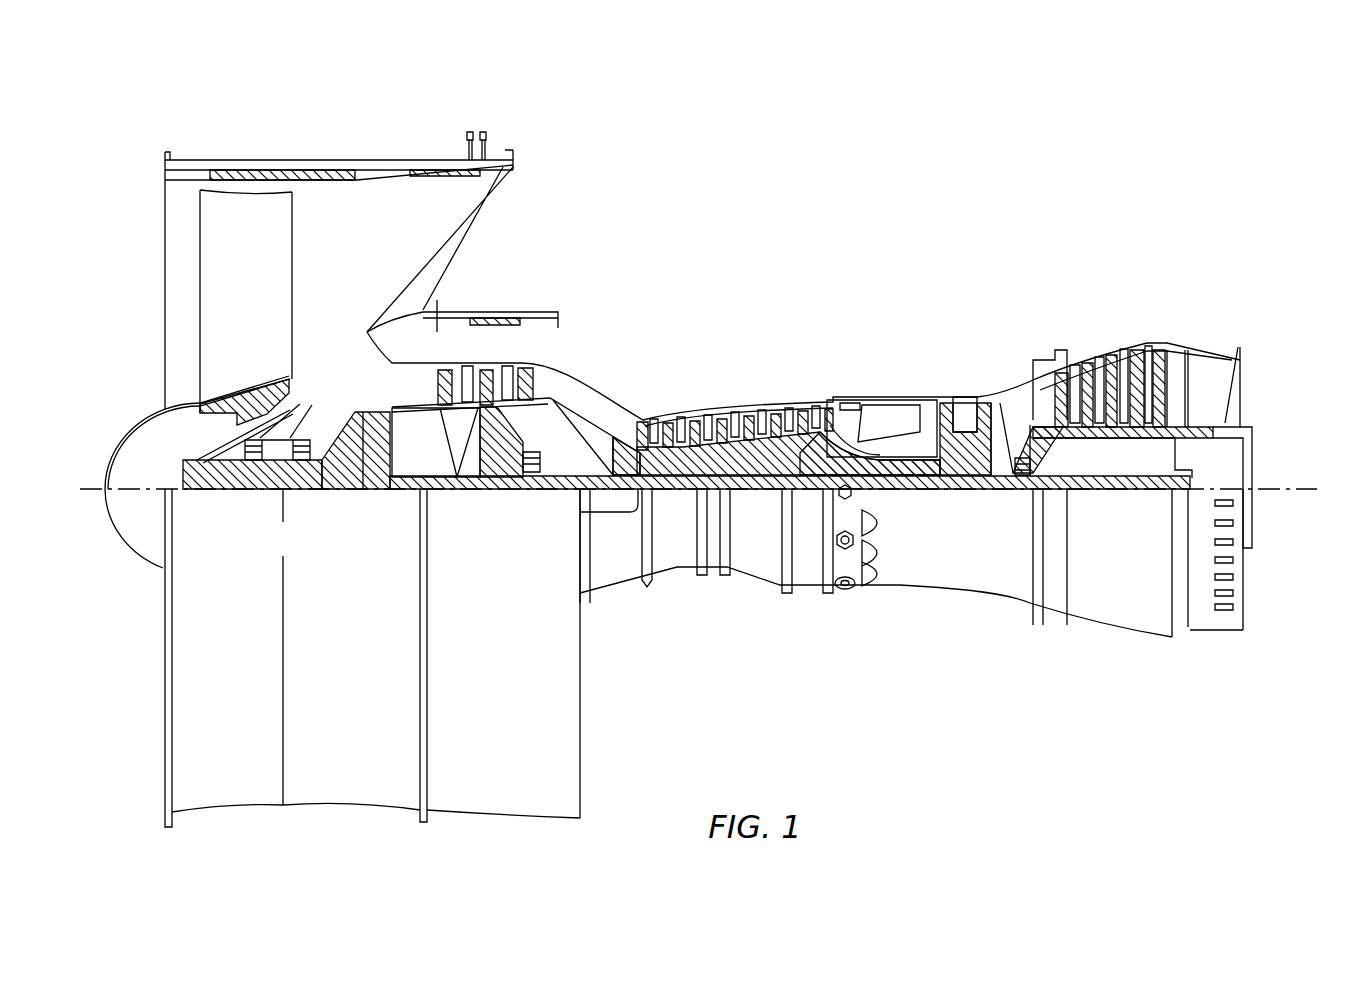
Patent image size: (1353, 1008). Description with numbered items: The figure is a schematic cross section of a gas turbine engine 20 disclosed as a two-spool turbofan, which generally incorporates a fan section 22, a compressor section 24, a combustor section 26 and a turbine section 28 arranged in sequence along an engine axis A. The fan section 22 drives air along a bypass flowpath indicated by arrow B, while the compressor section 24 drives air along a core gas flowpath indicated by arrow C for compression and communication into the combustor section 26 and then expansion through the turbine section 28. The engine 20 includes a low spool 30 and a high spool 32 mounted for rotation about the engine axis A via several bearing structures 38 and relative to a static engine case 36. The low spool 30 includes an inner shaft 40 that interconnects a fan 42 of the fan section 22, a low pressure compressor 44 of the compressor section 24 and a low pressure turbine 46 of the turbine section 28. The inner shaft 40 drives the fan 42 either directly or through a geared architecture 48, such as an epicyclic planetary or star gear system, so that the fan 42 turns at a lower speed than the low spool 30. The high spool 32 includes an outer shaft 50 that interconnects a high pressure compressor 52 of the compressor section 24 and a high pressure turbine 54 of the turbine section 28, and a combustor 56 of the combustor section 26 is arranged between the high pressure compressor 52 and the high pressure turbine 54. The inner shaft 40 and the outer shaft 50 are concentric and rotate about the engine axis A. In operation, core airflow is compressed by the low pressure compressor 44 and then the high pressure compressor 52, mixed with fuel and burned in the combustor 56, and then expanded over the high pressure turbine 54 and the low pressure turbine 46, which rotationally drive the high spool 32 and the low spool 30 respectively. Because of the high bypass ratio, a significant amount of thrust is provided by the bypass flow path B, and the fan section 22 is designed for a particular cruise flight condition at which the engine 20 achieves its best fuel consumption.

The gas turbine engine 20 is at (923, 202).
The fan section 22 is at (157, 138).
The compressor section 24 is at (432, 288).
The combustor section 26 is at (832, 288).
The turbine section 28 is at (1180, 288).
The low spool 30 is at (760, 501).
The high spool 32 is at (803, 450).
The static engine case 36 is at (810, 603).
The bearing structures 38 is at (245, 499).
The inner shaft 40 is at (682, 491).
The fan 42 is at (253, 314).
The low pressure compressor 44 is at (503, 380).
The low pressure turbine 46 is at (1110, 352).
The geared architecture 48 is at (373, 492).
The outer shaft 50 is at (900, 462).
The high pressure compressor 52 is at (743, 453).
The high pressure turbine 54 is at (963, 395).
The combustor 56 is at (887, 427).
The engine axis A is at (1297, 487).
The bypass flow path B is at (262, 248).
The core gas flowpath C is at (616, 417).